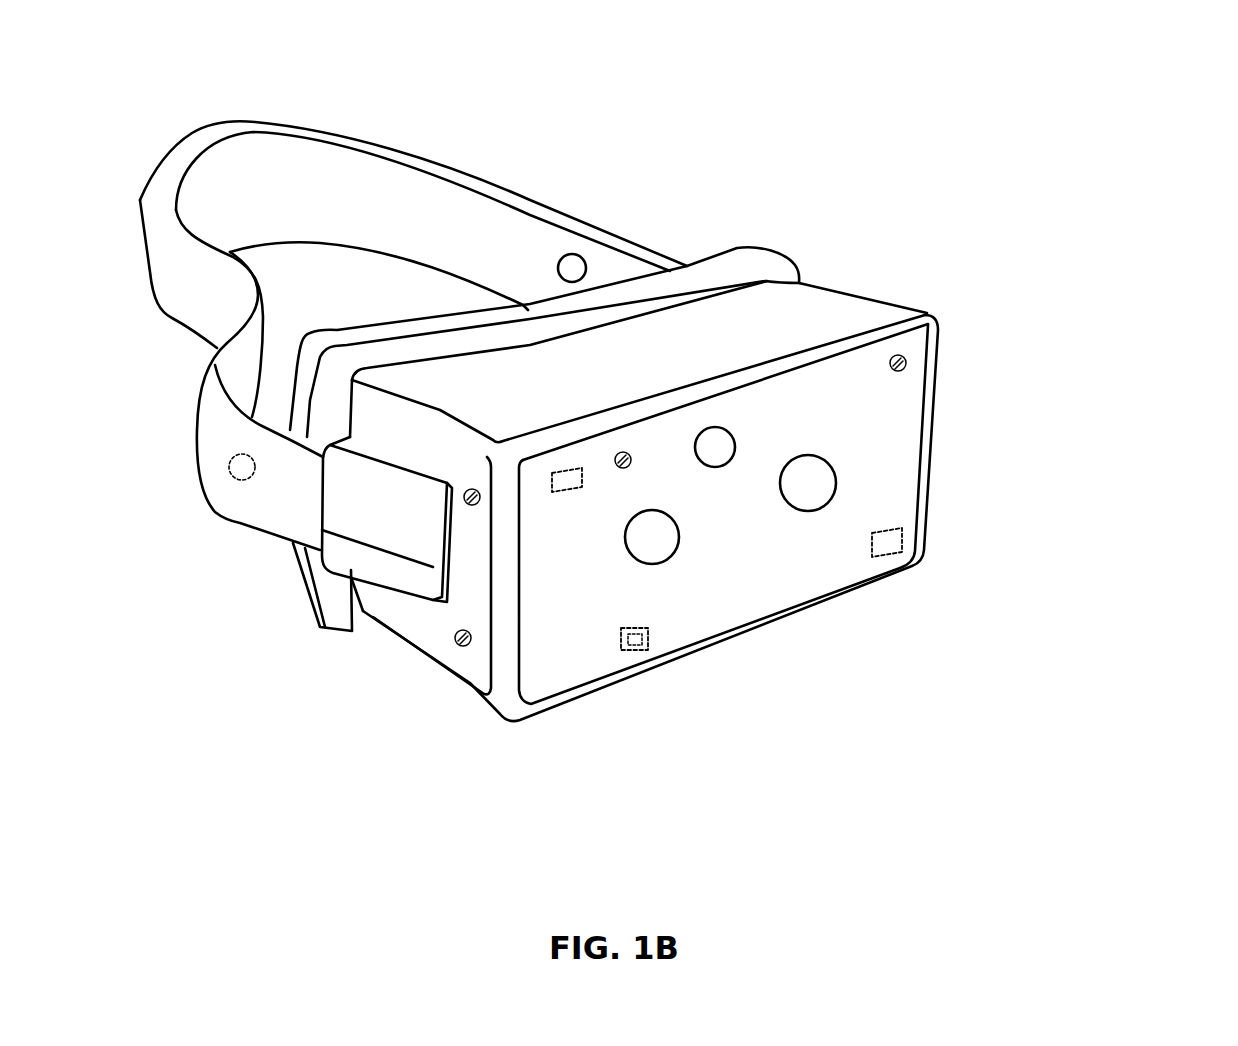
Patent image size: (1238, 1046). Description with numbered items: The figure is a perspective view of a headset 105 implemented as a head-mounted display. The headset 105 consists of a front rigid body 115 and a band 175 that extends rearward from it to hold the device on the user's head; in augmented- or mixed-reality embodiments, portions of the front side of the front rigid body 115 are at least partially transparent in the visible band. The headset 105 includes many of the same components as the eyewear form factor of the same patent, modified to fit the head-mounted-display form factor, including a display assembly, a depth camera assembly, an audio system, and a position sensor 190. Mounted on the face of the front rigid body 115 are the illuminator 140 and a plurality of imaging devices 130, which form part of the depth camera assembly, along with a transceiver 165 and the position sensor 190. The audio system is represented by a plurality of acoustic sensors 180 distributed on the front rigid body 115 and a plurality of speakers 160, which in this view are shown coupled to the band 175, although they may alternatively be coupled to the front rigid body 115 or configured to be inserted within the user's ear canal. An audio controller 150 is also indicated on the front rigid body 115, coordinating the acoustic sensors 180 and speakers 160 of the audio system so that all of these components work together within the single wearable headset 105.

The headset 105 is at (224, 93).
The band 175 is at (548, 206).
The front rigid body 115 is at (930, 318).
The illuminator 140 is at (727, 430).
The imaging devices 130 is at (675, 553).
The audio controller 150 is at (553, 492).
The transceiver 165 is at (897, 527).
The position sensor 190 is at (648, 637).
The acoustic sensors 180 is at (455, 641).
The speakers 160 is at (230, 478).